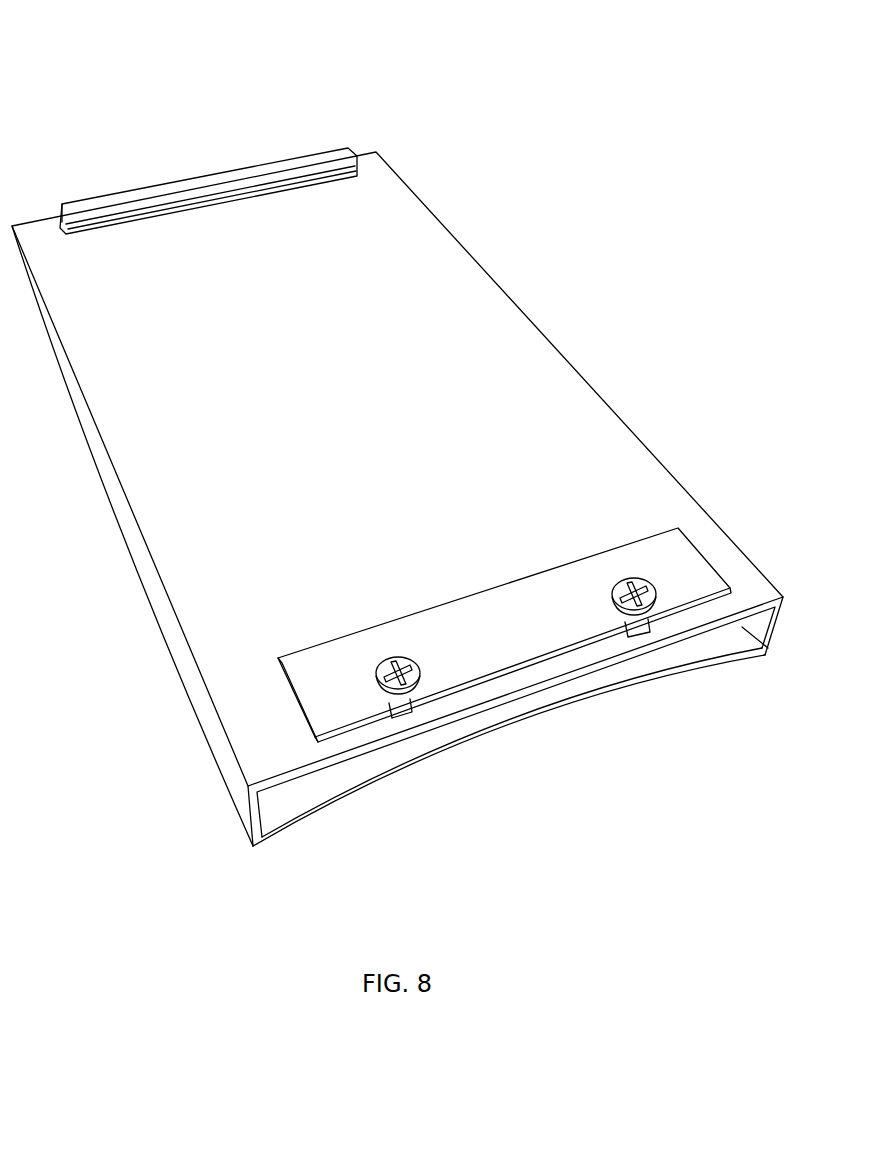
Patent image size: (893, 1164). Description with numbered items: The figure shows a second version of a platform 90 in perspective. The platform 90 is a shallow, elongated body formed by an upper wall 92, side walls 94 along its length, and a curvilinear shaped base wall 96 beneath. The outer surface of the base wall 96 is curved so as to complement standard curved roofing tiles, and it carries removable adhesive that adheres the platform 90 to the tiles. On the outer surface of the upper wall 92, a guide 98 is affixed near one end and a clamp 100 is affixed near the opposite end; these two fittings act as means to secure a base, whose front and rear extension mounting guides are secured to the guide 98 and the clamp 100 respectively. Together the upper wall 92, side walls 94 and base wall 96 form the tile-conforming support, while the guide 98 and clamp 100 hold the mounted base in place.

The platform 90 is at (399, 80).
The upper wall 92 is at (485, 304).
The side walls 94 is at (153, 592).
The base wall 96 is at (310, 815).
The guide 98 is at (386, 153).
The clamp 100 is at (678, 545).